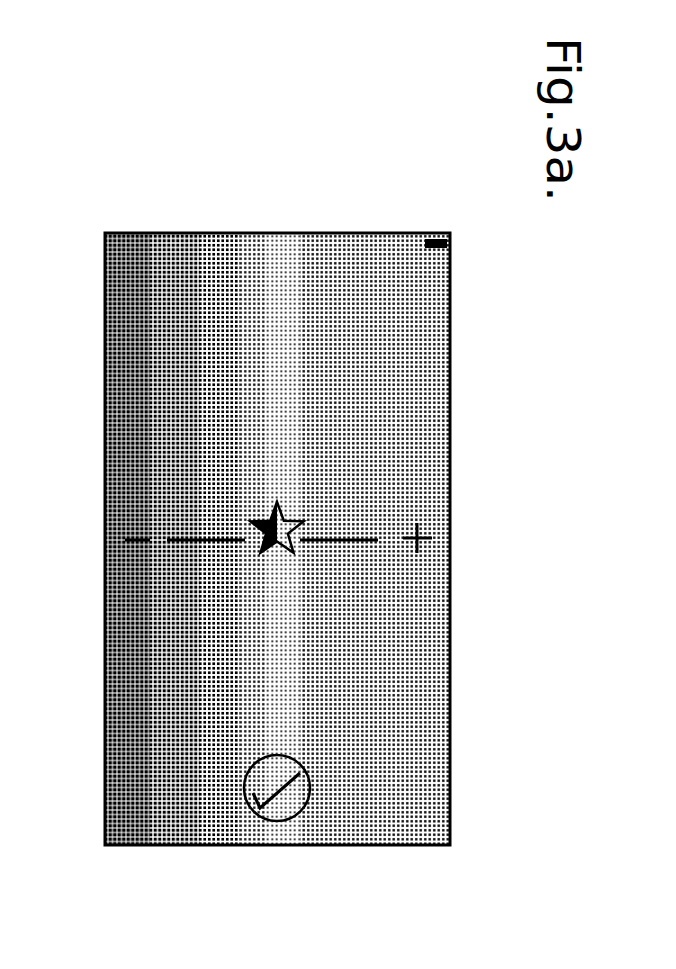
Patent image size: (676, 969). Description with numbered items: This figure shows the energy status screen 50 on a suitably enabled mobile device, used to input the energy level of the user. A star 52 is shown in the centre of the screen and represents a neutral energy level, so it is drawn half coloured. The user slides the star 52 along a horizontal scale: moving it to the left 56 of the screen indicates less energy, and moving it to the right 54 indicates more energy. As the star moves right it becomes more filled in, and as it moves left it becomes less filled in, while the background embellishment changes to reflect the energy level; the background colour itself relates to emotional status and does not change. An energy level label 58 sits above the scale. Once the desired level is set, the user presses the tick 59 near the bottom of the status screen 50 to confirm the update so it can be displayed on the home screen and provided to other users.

The energy status screen 50 is at (400, 410).
The star 52 is at (283, 548).
The right 54 is at (430, 537).
The left 56 is at (132, 540).
The energy level label text 58 is at (352, 348).
The tick 59 is at (283, 812).